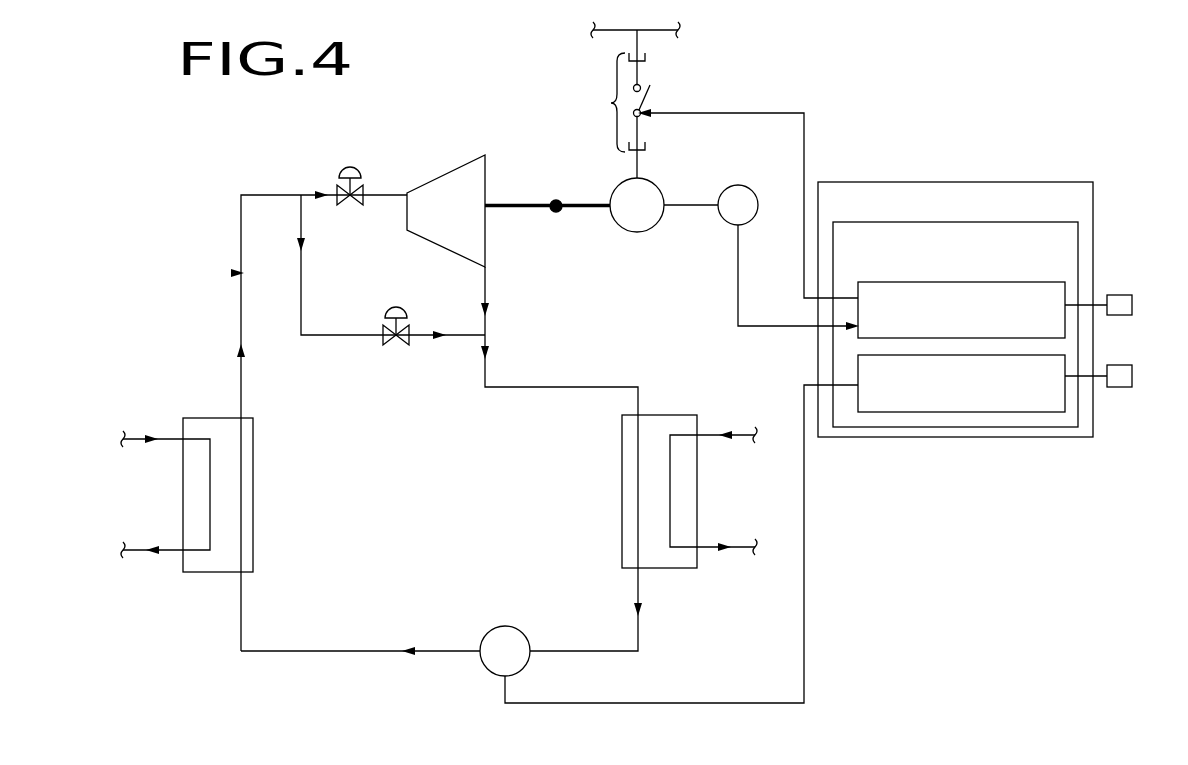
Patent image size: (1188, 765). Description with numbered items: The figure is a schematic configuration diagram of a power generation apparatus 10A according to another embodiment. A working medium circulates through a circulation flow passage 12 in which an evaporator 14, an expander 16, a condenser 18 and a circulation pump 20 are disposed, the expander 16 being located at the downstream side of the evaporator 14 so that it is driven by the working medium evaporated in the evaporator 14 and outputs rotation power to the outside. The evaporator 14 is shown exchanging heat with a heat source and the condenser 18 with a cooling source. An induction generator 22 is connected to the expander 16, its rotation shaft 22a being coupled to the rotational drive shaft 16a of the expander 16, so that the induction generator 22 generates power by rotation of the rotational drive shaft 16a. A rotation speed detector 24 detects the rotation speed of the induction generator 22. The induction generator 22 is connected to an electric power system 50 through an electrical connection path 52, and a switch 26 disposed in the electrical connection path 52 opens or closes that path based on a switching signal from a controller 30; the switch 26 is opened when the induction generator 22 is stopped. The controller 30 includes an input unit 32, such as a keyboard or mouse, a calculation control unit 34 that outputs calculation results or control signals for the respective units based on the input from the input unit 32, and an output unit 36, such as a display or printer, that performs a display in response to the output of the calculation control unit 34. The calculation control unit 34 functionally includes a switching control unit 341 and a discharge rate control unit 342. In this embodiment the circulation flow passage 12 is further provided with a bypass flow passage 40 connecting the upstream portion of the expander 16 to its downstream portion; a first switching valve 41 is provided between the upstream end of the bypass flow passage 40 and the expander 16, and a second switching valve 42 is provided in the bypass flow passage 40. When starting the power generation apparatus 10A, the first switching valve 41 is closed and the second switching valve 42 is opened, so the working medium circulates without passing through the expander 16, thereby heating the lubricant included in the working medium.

The power generation apparatus 10A is at (985, 91).
The circulation flow passage 12 is at (232, 274).
The evaporator 14 is at (253, 482).
The expander 16 is at (434, 246).
The rotational drive shaft 16a is at (516, 202).
The condenser 18 is at (622, 485).
The circulation pump 20 is at (503, 625).
The induction generator 22 is at (647, 230).
The rotation shaft 22a is at (582, 202).
The rotation speed detector 24 is at (748, 183).
The switch 26 is at (598, 108).
The controller 30 is at (955, 182).
The input unit 32 is at (1133, 303).
The calculation control unit 34 is at (1048, 222).
The output unit 36 is at (1133, 378).
The bypass flow passage 40 is at (302, 258).
The first switching valve 41 is at (362, 170).
The second switching valve 42 is at (384, 315).
The electric power system 50 is at (657, 33).
The electrical connection path 52 is at (633, 42).
The switching control unit 341 is at (1065, 322).
The discharge rate control unit 342 is at (945, 412).